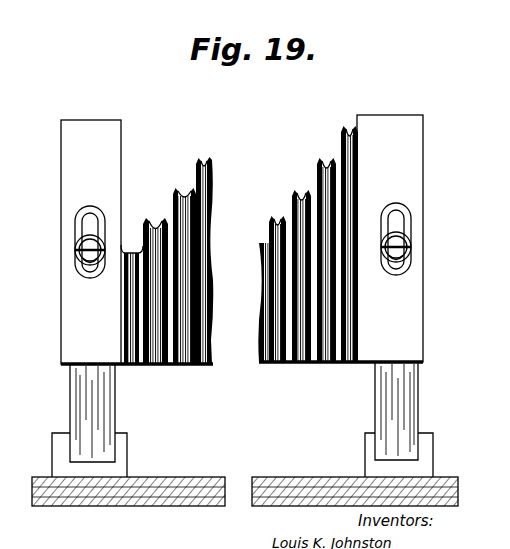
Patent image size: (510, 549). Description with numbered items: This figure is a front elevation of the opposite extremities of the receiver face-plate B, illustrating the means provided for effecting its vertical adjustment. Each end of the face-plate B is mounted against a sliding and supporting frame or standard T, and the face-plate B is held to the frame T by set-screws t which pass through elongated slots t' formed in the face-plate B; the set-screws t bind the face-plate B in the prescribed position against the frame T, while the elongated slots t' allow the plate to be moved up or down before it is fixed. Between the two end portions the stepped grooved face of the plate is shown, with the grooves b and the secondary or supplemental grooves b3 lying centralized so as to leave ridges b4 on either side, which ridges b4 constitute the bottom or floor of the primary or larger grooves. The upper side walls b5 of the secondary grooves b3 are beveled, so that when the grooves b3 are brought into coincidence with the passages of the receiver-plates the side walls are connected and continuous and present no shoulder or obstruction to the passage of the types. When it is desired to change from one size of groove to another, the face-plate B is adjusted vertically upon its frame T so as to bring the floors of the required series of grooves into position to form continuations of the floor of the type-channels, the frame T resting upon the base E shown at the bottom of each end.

The face-plate B is at (242, 239).
The elongated slots t' is at (237, 240).
The set-screws t is at (258, 248).
The bar b is at (155, 280).
The secondary grooves b3 is at (158, 368).
The ridges b4 is at (139, 368).
The upper side walls b5 is at (172, 190).
The frame T is at (242, 419).
The base plate E is at (245, 503).